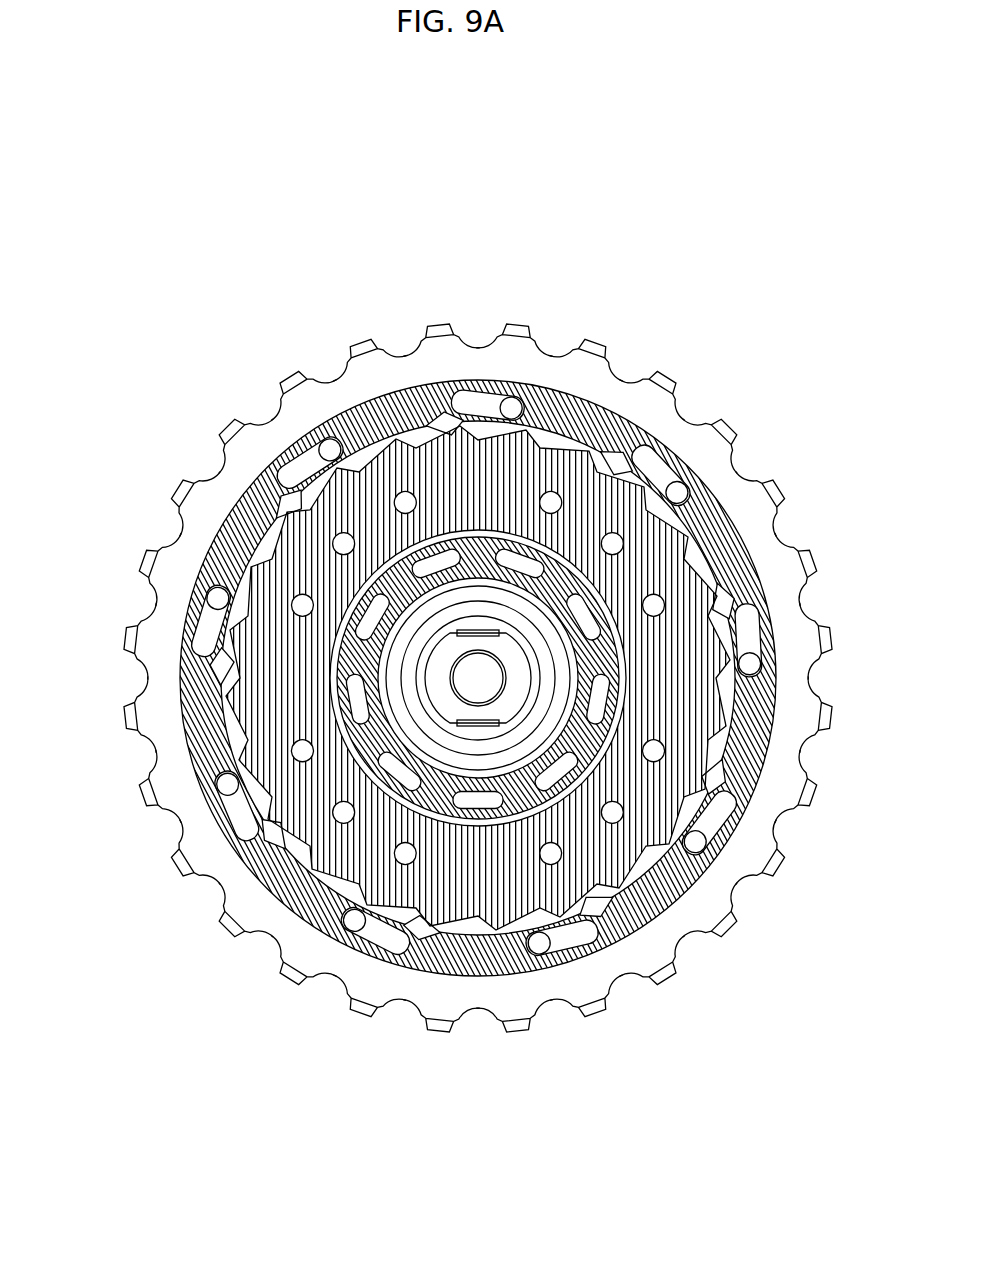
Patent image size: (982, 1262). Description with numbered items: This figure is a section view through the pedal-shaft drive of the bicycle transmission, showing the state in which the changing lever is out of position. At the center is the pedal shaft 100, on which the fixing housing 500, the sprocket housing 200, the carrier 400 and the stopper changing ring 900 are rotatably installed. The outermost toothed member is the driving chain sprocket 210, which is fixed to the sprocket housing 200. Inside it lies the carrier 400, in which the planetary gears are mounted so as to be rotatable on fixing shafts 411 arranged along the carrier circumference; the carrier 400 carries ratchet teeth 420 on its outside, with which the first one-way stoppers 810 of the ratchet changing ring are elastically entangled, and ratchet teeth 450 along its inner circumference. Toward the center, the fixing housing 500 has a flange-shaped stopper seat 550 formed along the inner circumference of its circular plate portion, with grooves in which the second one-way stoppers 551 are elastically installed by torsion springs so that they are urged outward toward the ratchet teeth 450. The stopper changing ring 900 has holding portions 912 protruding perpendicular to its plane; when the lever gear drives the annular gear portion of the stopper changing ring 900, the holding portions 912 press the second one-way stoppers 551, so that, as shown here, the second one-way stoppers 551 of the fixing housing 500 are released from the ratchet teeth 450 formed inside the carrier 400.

The pedal shaft 100 is at (464, 690).
The sprocket housing 200 is at (478, 716).
The driving chain sprocket 210 is at (442, 1010).
The carrier 400 is at (388, 722).
The fixing shafts 411 is at (300, 614).
The ratchet teeth 420 is at (243, 830).
The ratchet teeth 450 is at (340, 873).
The fixing housing 500 is at (454, 660).
The stopper seat 550 is at (440, 534).
The second one-way stoppers 551 is at (453, 553).
The first one-way stoppers 810 is at (765, 815).
The stopper changing ring 900 is at (613, 677).
The holding portions 912 is at (683, 485).